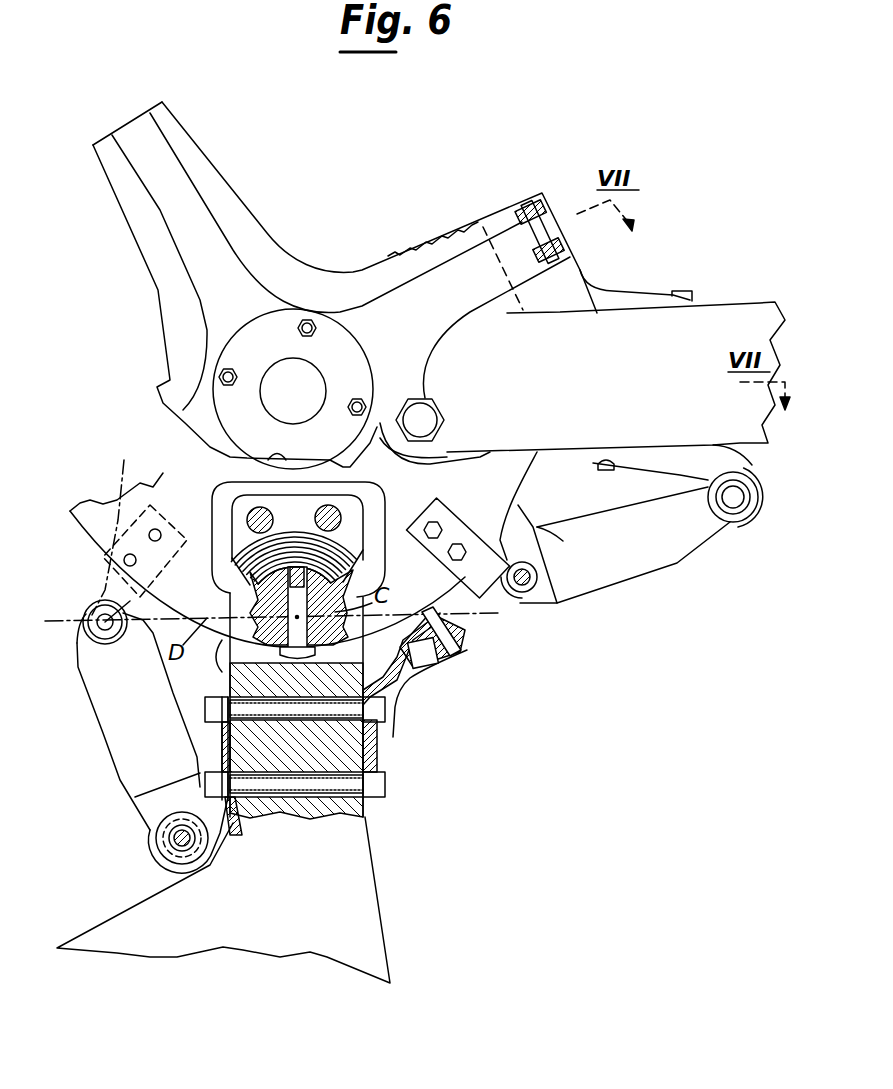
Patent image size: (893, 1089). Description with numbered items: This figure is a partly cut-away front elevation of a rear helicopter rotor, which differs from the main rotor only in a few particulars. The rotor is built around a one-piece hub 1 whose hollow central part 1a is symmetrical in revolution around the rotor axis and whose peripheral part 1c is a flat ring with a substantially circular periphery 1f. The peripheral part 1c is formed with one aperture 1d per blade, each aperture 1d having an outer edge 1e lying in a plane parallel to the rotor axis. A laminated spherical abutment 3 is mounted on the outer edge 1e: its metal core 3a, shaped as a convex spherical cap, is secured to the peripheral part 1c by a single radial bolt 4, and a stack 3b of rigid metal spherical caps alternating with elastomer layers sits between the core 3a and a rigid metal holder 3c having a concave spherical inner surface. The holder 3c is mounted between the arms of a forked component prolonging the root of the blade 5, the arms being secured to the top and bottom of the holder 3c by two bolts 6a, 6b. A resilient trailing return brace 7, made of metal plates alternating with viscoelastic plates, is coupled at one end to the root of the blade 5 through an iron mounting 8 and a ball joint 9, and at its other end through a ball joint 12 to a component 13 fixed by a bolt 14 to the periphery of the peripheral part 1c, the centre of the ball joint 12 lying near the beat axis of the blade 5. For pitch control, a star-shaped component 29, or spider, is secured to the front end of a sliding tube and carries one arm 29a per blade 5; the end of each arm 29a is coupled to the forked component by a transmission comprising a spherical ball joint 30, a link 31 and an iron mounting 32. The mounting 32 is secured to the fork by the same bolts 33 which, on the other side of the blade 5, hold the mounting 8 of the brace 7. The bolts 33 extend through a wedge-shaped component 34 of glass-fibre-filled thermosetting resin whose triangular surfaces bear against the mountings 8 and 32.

The hub 1 is at (500, 487).
The central part 1a is at (336, 358).
The peripheral part 1c is at (520, 477).
The aperture 1d is at (368, 504).
The outer edge 1e is at (362, 583).
The periphery 1f is at (550, 533).
The laminated spherical abutment 3 is at (240, 583).
The core 3a is at (262, 590).
The stack 3b is at (343, 547).
The holder 3c is at (285, 493).
The bolt 4 is at (312, 650).
The blade 5 is at (717, 330).
The bolt 6a is at (248, 514).
The bolt 6b is at (340, 503).
The resilient trailing return brace 7 is at (105, 745).
The iron mounting 8 is at (215, 760).
The ball joint 9 is at (156, 848).
The ball joint 12 is at (101, 612).
The component 13 is at (117, 527).
The bolt 14 is at (122, 557).
The star-shaped component 29 is at (312, 287).
The arm 29a is at (456, 245).
The spherical ball joint 30 is at (545, 215).
The link 31 is at (463, 633).
The iron mounting 32 is at (592, 283).
The bolt 33 is at (688, 290).
The wedge-shaped component 34 is at (373, 747).